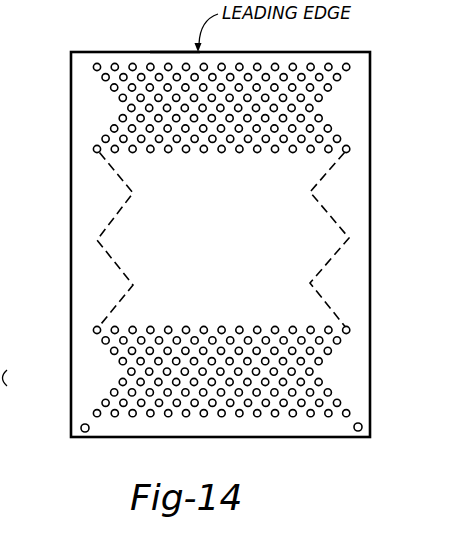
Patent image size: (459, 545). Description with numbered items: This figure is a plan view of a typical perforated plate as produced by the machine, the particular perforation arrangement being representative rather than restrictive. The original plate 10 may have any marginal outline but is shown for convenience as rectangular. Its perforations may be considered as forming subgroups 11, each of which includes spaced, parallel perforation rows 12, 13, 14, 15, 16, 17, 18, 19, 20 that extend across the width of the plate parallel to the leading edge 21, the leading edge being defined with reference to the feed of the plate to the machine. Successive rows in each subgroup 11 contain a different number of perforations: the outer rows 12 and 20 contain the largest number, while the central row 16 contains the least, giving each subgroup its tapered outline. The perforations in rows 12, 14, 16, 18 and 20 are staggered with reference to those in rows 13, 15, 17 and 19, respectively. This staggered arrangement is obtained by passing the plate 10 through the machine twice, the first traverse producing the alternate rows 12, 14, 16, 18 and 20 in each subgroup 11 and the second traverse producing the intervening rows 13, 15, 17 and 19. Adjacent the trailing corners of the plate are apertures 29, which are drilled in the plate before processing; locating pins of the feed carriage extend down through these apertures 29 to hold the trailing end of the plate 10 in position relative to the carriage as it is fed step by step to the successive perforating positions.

The original plate 10 is at (55, 241).
The subgroups 11 is at (259, 47).
The perforation row 12 is at (93, 67).
The perforation row 13 is at (341, 77).
The perforation row 14 is at (110, 88).
The perforation row 15 is at (322, 98).
The central perforation row 16 is at (128, 108).
The perforation row 17 is at (322, 118).
The perforation row 18 is at (110, 128).
The perforation row 19 is at (341, 139).
The perforation row 20 is at (93, 149).
The leading edge 21 is at (177, 51).
The apertures 29 is at (82, 432).